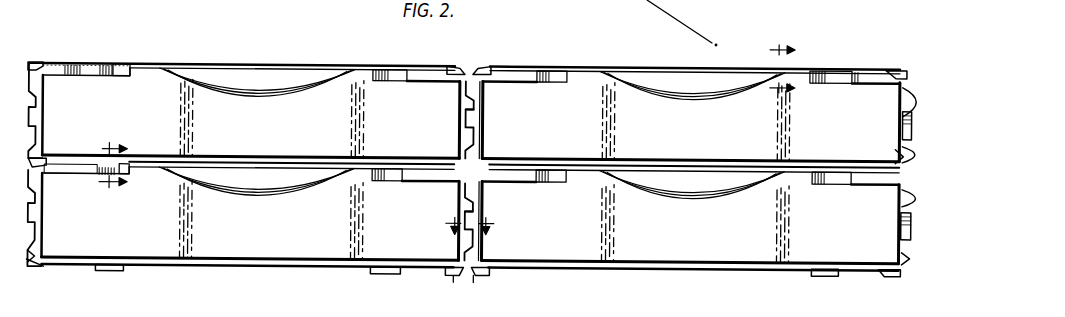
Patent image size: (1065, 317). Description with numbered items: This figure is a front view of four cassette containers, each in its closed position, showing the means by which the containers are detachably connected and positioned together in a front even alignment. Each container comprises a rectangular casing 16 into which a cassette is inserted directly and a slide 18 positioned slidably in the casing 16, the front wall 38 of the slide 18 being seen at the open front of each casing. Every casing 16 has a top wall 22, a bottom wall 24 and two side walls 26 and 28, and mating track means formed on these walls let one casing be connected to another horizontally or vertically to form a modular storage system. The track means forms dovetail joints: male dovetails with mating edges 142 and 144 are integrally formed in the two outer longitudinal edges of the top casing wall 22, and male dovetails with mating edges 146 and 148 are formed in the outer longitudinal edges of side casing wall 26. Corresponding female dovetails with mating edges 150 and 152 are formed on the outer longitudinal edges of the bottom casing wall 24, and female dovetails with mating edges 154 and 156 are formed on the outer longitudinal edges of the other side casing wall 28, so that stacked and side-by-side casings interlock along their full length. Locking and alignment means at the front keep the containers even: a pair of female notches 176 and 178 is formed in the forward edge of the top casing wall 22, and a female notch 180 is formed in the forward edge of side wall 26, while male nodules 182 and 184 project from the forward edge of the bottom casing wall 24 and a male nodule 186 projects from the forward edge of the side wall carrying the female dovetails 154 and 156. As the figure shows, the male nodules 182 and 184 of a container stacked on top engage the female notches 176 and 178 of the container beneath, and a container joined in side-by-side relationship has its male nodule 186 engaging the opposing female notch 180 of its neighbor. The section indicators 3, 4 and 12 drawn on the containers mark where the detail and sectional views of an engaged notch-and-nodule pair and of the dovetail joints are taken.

The section line 3- 3 is at (117, 163).
The section line 4- 4 is at (467, 233).
The section line 12- 12 is at (792, 67).
The casing 16 is at (82, 48).
The slide 18 is at (152, 93).
The top wall 22 is at (352, 63).
The bottom wall 24 is at (340, 155).
The side wall 26 is at (460, 93).
The side wall 28 is at (38, 116).
The front wall 38 is at (313, 95).
The mating edge 142 is at (458, 68).
The mating edge 144 is at (38, 62).
The mating edge 146 is at (907, 108).
The mating edge 148 is at (907, 143).
The mating edge 150 is at (455, 272).
The mating edge 152 is at (44, 264).
The mating edge 154 is at (44, 77).
The mating edge 156 is at (43, 153).
The female notch 176 is at (394, 68).
The female notch 178 is at (117, 66).
The female notch 180 is at (468, 116).
The male nodule 182 is at (135, 154).
The male nodule 184 is at (395, 155).
The male nodule 186 is at (37, 128).